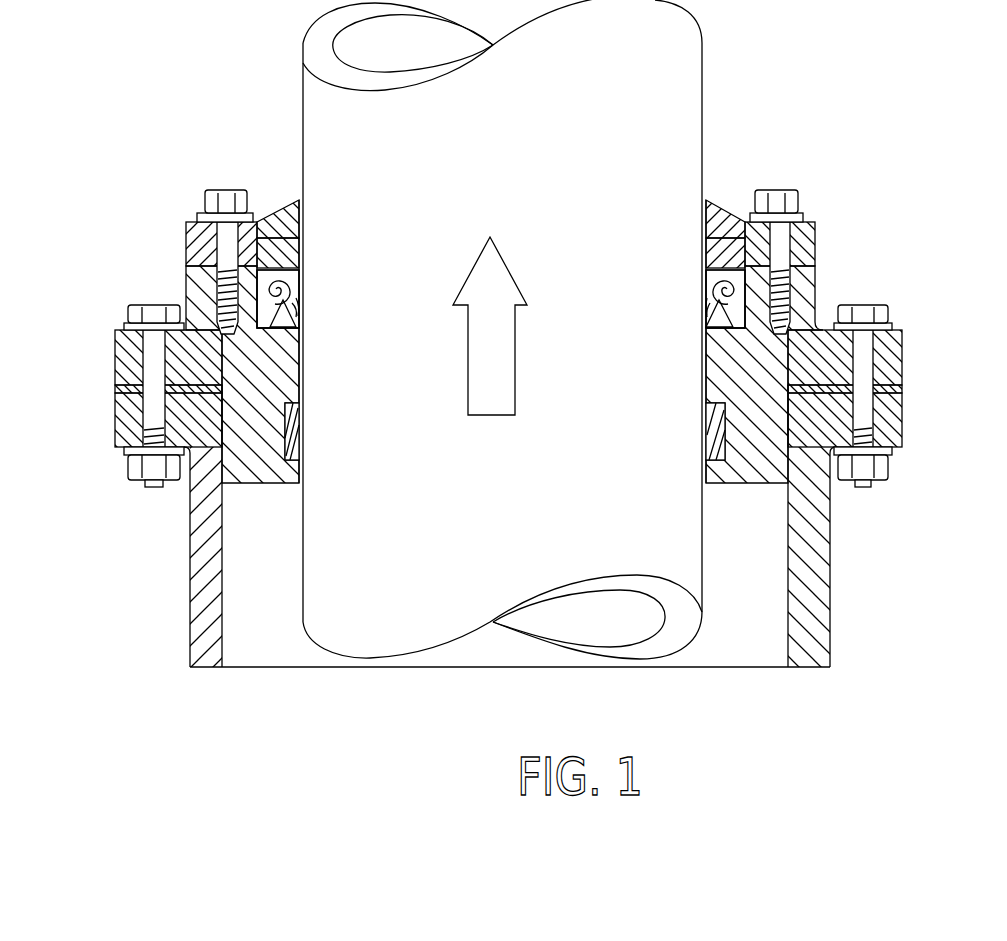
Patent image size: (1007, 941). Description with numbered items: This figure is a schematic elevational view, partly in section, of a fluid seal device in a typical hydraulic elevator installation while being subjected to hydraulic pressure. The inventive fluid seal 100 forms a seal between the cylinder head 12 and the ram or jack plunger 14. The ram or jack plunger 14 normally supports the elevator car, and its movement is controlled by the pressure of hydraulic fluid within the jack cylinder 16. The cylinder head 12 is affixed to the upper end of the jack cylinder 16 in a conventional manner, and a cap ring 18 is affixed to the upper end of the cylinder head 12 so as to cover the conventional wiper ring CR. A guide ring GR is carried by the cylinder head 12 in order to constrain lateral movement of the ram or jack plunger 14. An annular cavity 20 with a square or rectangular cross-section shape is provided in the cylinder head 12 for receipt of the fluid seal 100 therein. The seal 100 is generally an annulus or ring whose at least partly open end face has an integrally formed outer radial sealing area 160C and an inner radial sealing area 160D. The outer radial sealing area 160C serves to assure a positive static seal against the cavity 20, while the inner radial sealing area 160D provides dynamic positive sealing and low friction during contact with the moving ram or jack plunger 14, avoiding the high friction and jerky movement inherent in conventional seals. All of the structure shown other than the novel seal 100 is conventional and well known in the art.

The cylinder head 12 is at (115, 358).
The ram or jack plunger 14 is at (517, 530).
The jack cylinder 16 is at (190, 573).
The cap ring 18 is at (186, 246).
The annular cavity 20 is at (297, 345).
The fluid seal 100 is at (268, 332).
The outer radial sealing area 160C is at (256, 306).
The inner radial sealing area 160D is at (303, 307).
The wiper ring CR is at (291, 203).
The guide ring GR is at (305, 438).